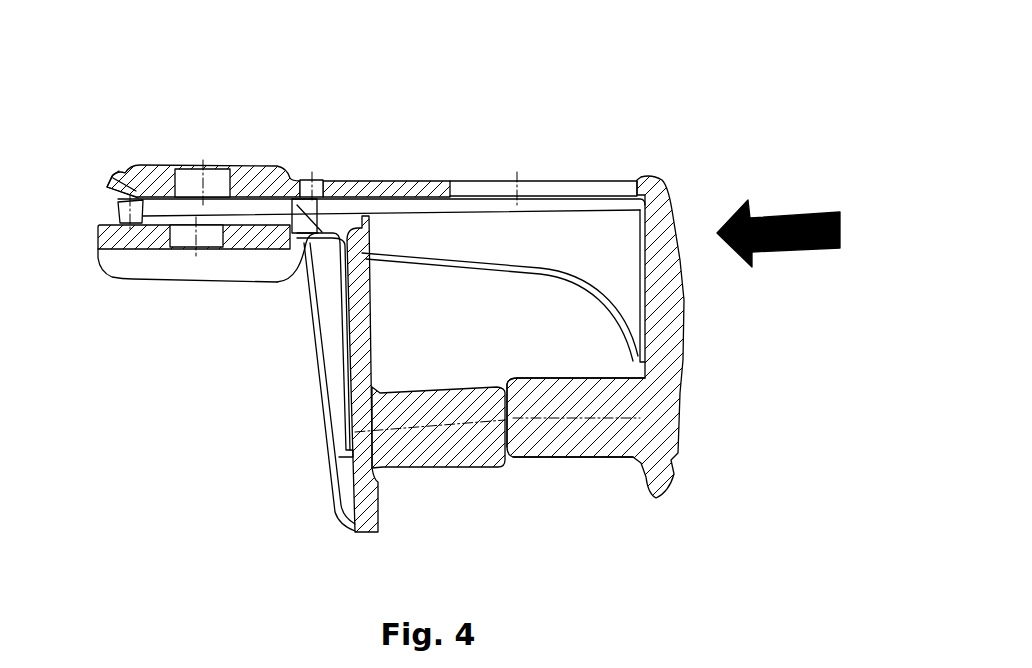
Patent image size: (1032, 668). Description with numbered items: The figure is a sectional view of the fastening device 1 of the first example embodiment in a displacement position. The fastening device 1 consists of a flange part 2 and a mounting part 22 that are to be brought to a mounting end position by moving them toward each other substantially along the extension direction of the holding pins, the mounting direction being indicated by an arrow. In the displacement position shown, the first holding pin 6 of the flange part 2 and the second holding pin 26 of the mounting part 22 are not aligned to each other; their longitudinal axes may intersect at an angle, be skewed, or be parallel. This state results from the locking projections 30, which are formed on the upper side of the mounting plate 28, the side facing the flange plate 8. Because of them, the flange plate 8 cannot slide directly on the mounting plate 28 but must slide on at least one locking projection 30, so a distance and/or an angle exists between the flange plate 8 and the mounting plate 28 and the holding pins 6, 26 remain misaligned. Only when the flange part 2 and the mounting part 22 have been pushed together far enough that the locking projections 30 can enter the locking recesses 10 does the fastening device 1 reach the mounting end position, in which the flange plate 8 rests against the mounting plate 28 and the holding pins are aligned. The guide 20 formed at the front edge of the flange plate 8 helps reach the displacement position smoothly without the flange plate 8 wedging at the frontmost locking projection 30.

The fastening device 1 is at (89, 118).
The flange part 2 is at (712, 357).
The first holding pin 6 is at (553, 440).
The flange plate 8 is at (387, 183).
The locking recesses 10 is at (313, 181).
The guide 20 is at (108, 188).
The mounting part 22 is at (292, 427).
The second holding pin 26 is at (453, 447).
The mounting plate 28 is at (300, 230).
The locking projections 30 is at (177, 283).